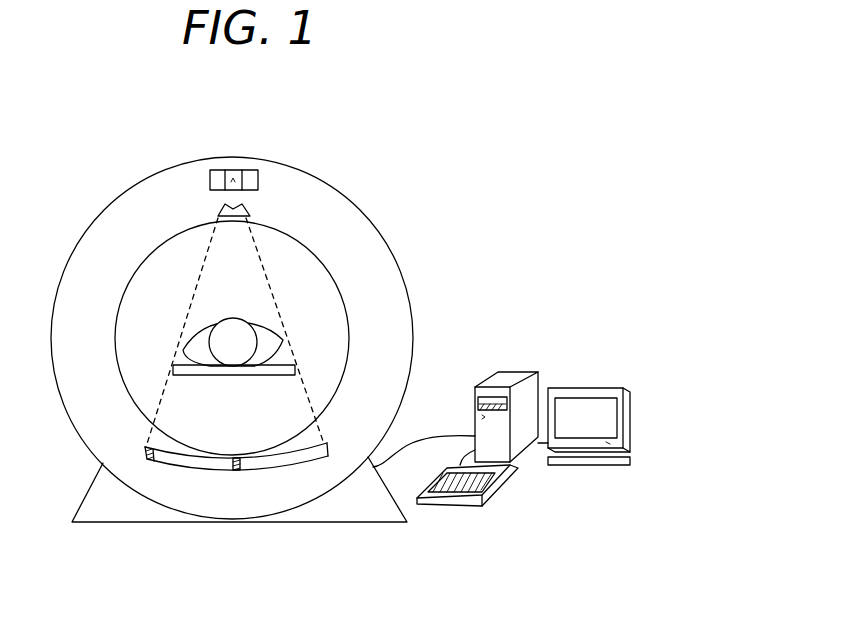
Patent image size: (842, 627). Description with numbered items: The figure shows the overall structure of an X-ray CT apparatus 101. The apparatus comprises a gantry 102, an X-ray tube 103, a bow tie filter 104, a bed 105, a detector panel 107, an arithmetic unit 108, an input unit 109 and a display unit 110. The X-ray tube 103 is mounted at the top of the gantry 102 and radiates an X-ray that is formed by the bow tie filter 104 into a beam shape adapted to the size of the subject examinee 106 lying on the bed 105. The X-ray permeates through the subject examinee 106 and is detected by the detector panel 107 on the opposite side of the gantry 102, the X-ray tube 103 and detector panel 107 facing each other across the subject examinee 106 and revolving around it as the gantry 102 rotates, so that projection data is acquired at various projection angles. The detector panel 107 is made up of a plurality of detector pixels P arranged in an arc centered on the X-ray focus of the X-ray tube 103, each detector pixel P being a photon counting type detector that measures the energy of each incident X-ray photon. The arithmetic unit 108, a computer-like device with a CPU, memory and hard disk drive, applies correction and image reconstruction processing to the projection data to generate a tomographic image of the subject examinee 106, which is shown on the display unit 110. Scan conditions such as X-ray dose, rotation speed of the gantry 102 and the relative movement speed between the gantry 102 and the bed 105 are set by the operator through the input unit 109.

The X-ray CT apparatus 101 is at (358, 170).
The gantry 102 is at (357, 238).
The X-ray tube 103 is at (217, 178).
The bow tie filter 104 is at (217, 207).
The bed 105 is at (212, 375).
The subject examinee 106 is at (272, 350).
The detector panel 107 is at (225, 476).
The arithmetic unit 108 is at (517, 373).
The input unit 109 is at (510, 482).
The display unit 110 is at (598, 387).
The detector pixel P is at (242, 470).